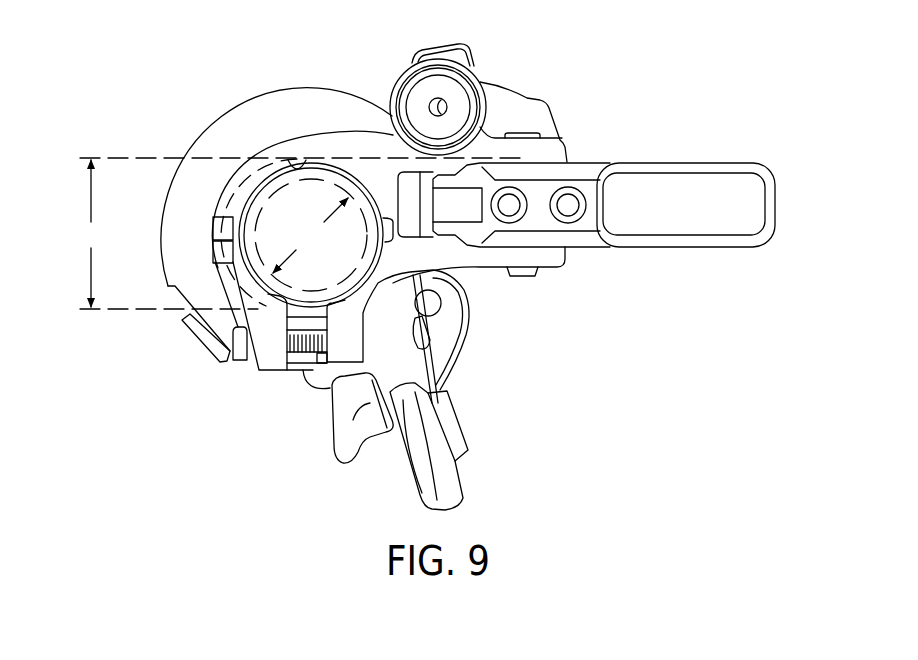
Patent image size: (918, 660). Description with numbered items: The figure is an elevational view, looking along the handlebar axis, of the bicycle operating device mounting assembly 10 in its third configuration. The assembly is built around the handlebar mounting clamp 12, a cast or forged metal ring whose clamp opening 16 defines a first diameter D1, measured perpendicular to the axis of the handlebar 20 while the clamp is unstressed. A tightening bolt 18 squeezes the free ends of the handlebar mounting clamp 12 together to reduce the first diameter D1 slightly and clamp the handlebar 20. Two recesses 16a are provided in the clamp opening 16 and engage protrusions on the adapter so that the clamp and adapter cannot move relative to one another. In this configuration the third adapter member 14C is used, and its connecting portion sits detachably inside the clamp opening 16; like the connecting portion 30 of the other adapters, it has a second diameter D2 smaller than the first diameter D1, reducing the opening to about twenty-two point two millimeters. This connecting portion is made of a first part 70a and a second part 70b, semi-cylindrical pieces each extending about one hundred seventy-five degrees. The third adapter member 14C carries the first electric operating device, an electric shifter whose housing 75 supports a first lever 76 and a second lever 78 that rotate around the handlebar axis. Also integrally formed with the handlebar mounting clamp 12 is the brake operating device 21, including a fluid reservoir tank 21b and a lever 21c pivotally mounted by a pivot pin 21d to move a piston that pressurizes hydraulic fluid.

The bicycle operating device mounting assembly 10 is at (642, 34).
The handlebar mounting clamp 12 is at (250, 152).
The third adapter member 14C is at (229, 261).
The clamp opening 16 is at (287, 164).
The recess 16a is at (228, 218).
The tightening bolt 18 is at (232, 338).
The handlebar 20 is at (233, 182).
The brake operating device 21 is at (549, 276).
The fluid reservoir tank 21b is at (498, 87).
The lever 21c is at (708, 162).
The pivot pin 21d is at (530, 132).
The connecting portion 30 is at (327, 164).
The first part 70a is at (358, 280).
The second part 70b is at (258, 345).
The housing 75 is at (160, 228).
The first lever 76 is at (330, 437).
The second lever 78 is at (465, 476).
The first diameter D1 is at (298, 233).
The second diameter D2 is at (311, 235).